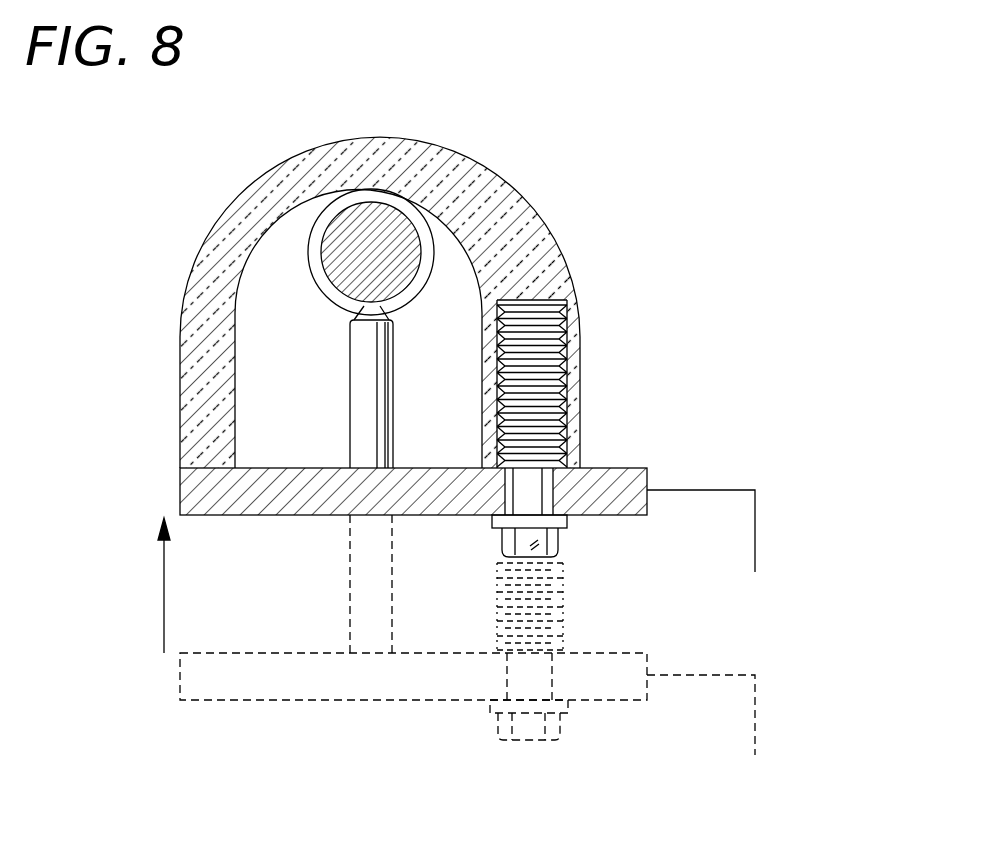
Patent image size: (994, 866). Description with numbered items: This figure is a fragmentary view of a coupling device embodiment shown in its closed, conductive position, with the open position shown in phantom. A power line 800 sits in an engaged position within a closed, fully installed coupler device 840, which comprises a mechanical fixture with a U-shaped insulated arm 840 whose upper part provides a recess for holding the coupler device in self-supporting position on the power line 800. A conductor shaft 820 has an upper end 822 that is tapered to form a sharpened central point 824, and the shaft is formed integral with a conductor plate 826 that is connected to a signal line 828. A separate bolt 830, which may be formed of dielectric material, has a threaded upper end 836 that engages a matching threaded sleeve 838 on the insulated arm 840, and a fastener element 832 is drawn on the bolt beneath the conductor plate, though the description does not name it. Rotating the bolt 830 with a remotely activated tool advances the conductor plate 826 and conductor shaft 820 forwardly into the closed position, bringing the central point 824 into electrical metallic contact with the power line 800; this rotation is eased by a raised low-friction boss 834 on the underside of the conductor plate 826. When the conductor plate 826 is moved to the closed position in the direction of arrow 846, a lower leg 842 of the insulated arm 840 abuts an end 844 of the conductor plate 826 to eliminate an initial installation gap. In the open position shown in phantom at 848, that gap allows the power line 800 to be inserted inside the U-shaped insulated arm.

The power line 800 is at (373, 213).
The conductor shaft 820 is at (360, 415).
The upper end 822 is at (365, 330).
The sharpened central point 824 is at (368, 303).
The conductor plate 826 is at (343, 500).
The signal line 828 is at (757, 517).
The bolt 830 is at (572, 437).
The nut 832 is at (500, 545).
The raised low-friction boss 834 is at (568, 523).
The threaded upper end 836 is at (562, 352).
The threaded sleeve 838 is at (485, 367).
The coupler device 840 is at (498, 172).
The lower leg 842 is at (185, 432).
The end of the conductor plate 844 is at (180, 483).
The arrow 846 is at (163, 580).
The open position shown in phantom 848 is at (360, 690).